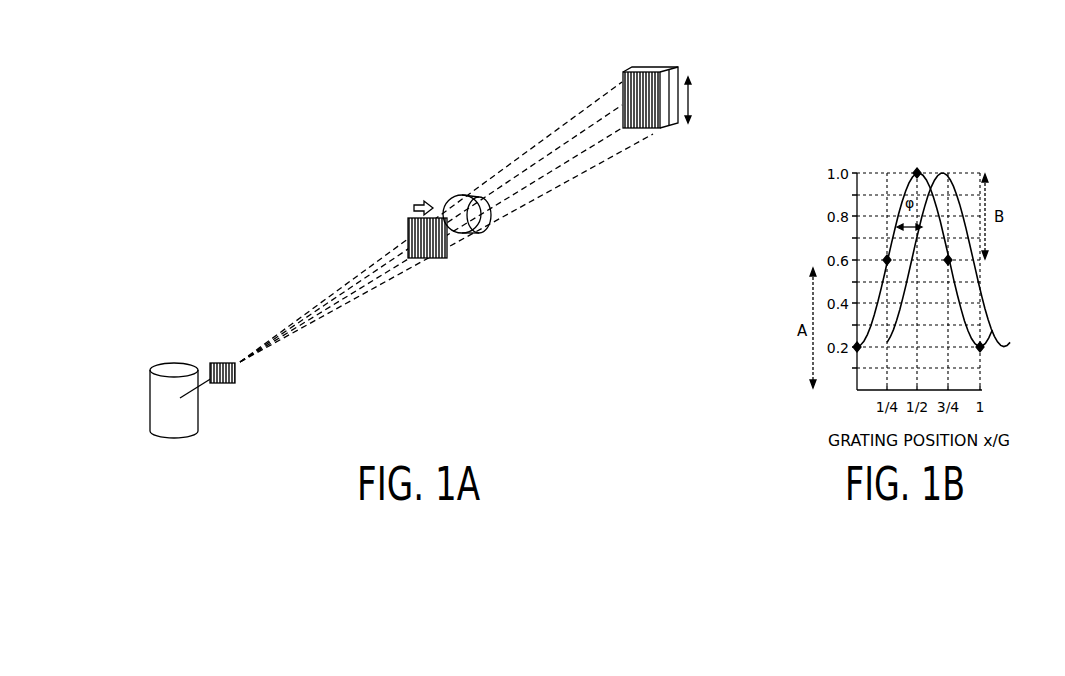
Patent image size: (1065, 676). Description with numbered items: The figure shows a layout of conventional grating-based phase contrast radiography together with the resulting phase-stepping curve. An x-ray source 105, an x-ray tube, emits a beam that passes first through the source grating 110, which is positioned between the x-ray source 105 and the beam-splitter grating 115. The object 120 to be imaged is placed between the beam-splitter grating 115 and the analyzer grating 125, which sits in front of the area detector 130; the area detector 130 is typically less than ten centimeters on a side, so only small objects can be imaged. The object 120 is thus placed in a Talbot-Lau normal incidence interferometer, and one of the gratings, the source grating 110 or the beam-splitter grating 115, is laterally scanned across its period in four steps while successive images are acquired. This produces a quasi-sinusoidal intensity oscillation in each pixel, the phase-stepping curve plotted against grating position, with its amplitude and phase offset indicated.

The x-ray source 105 is at (198, 415).
The source grating G0 110 is at (238, 380).
The beam-splitter grating G1 115 is at (447, 245).
The object 120 is at (491, 215).
The analyzer grating G2 125 is at (624, 80).
The area detector 130 is at (785, 43).